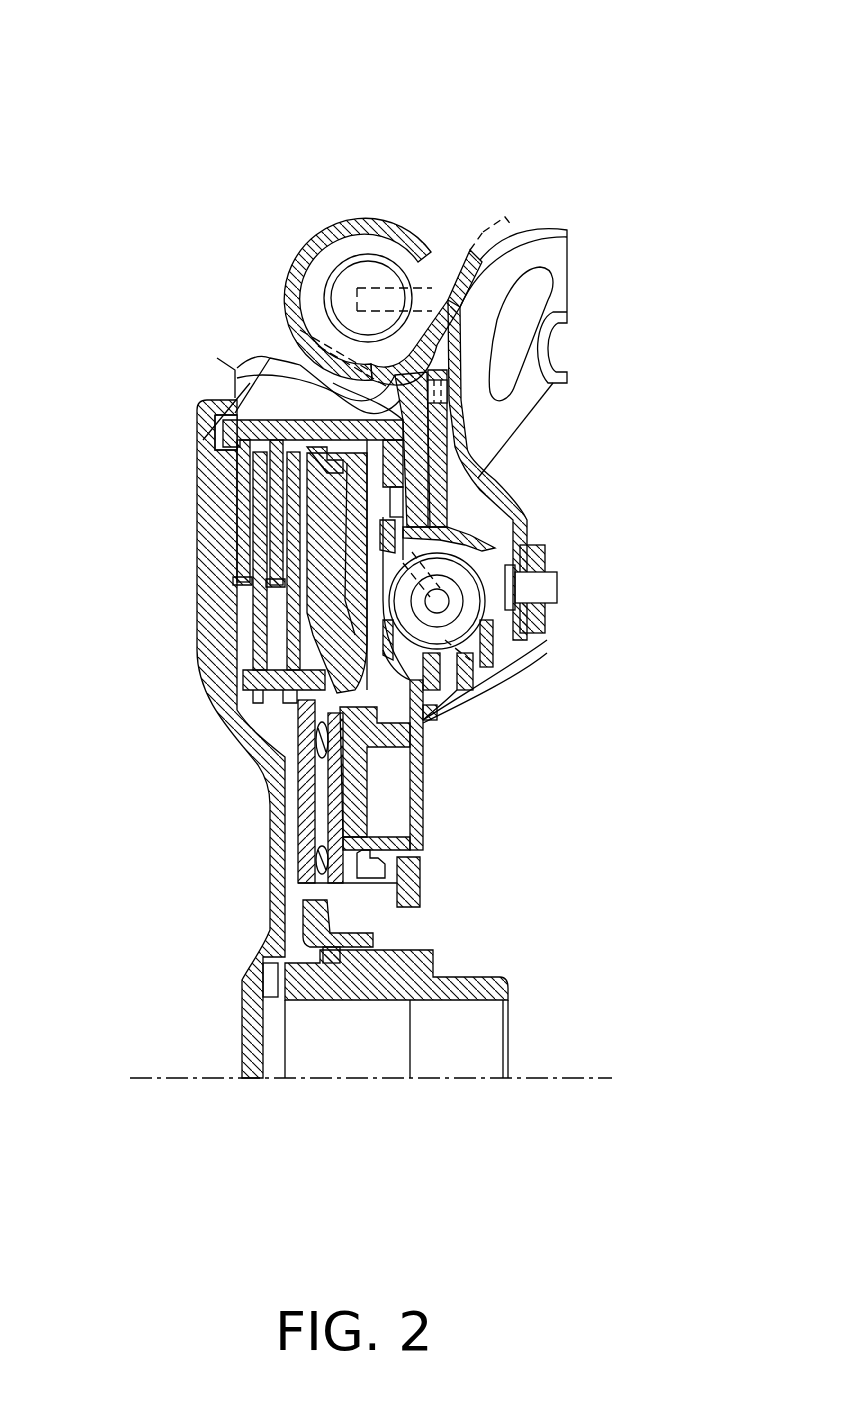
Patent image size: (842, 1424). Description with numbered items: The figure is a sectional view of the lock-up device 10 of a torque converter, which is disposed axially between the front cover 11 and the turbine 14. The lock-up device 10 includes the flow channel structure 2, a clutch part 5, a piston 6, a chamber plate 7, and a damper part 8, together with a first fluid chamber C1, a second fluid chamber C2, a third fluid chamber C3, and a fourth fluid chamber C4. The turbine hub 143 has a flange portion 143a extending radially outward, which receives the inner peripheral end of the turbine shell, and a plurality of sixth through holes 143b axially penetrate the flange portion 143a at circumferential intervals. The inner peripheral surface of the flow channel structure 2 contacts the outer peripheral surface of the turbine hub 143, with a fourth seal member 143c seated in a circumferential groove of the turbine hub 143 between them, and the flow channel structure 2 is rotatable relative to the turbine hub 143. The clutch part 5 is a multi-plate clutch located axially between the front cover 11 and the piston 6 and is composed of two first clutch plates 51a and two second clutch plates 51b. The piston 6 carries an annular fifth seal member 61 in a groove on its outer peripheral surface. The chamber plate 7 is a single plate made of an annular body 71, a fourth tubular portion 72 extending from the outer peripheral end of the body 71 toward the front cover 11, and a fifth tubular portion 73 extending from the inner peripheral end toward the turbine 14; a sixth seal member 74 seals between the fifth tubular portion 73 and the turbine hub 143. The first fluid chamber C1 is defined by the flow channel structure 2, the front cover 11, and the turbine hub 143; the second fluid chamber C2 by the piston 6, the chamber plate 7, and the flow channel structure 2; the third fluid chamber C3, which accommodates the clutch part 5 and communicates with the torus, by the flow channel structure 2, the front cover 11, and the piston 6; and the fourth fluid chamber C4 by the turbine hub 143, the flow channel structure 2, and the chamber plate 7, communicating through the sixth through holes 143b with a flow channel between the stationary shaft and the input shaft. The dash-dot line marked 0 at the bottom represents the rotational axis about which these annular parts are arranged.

The lock-up device 10 is at (397, 133).
The damper part 8 is at (430, 222).
The fourth tubular portion 72 is at (338, 462).
The fifth seal member 61 is at (233, 398).
The clutch part 5 is at (58, 482).
The second clutch plates 51b is at (245, 492).
The first clutch plates 51a is at (257, 598).
The piston 6 is at (313, 613).
The third fluid chamber C3 is at (262, 700).
The front cover 11 is at (220, 718).
The flow channel structure 2 is at (282, 808).
The sixth seal member 74 is at (320, 860).
The first fluid chamber C1 is at (307, 903).
The turbine 14 is at (543, 640).
The second fluid chamber C2 is at (437, 724).
The body 71 is at (420, 760).
The chamber plate 7 is at (380, 799).
The fifth tubular portion 73 is at (420, 830).
The flange portion 143a is at (420, 887).
The fourth fluid chamber C4 is at (375, 910).
The sixth through holes 143b is at (418, 932).
The turbine hub 143 is at (394, 985).
The fourth seal member 143c is at (330, 965).
The rotation axis 0 is at (373, 1075).